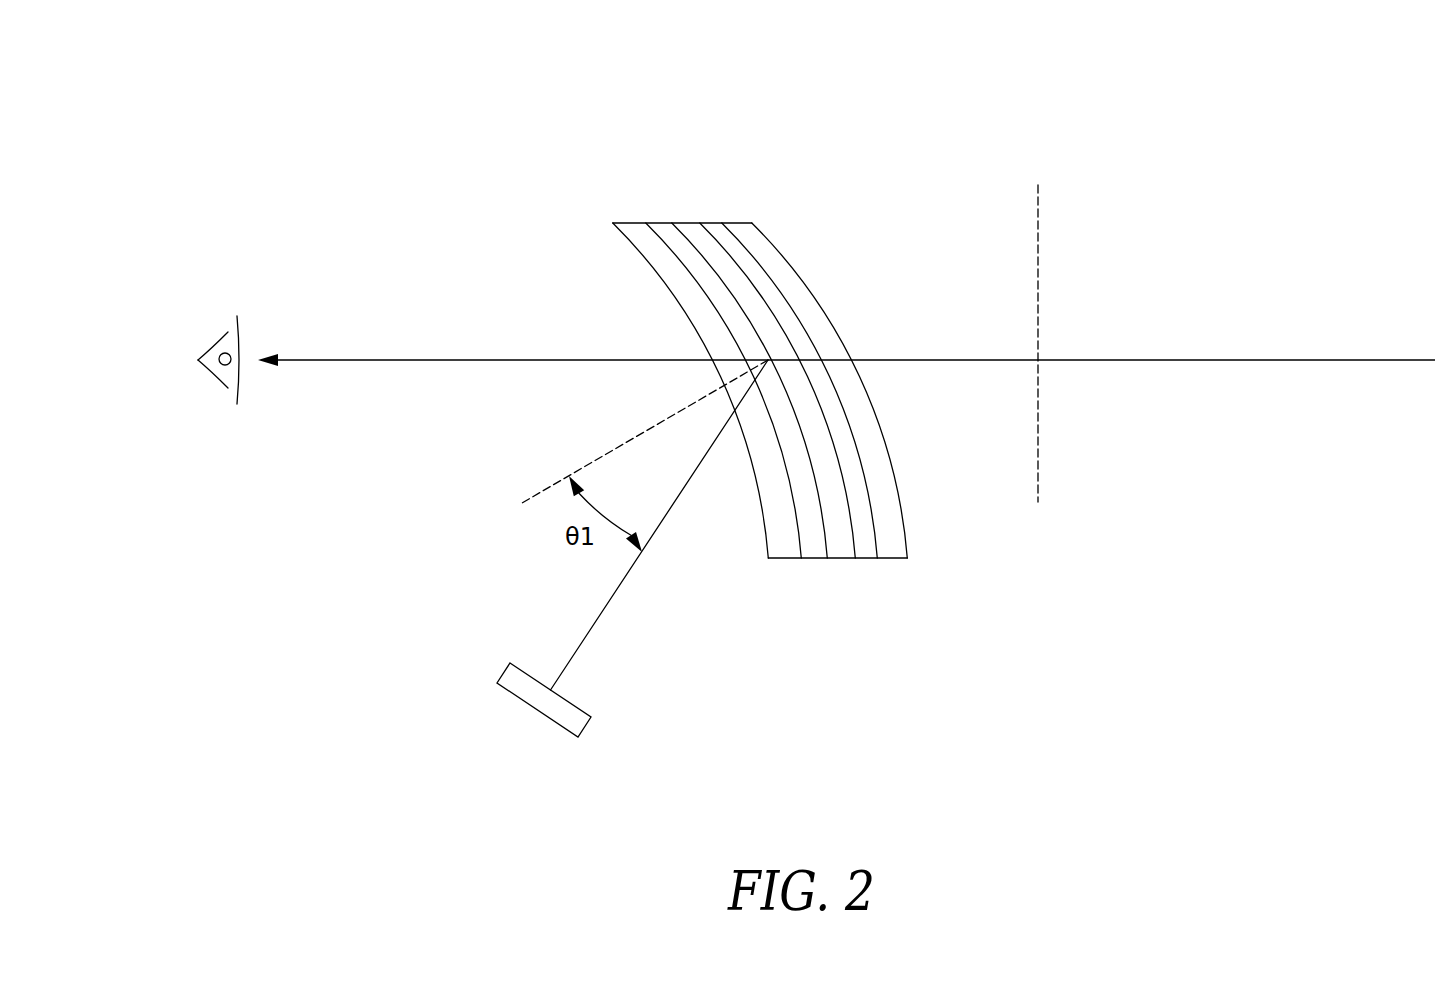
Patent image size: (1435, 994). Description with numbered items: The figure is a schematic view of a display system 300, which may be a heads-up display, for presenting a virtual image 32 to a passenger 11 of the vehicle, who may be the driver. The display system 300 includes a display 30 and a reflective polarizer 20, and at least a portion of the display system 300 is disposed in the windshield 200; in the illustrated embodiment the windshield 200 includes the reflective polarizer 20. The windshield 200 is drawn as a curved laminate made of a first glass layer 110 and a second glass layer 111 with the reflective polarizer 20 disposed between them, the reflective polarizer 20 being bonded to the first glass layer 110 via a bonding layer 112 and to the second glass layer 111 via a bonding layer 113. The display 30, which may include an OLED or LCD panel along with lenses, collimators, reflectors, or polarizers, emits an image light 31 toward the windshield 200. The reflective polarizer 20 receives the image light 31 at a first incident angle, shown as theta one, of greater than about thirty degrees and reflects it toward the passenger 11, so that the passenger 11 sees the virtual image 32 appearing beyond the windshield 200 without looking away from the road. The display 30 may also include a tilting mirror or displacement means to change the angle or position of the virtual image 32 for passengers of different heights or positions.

The display system 300 is at (213, 63).
The windshield 200 is at (760, 140).
The passenger 11 is at (197, 313).
The virtual image 32 is at (1038, 203).
The image light 31 is at (587, 637).
The display 30 is at (517, 680).
The reflective polarizer 20 is at (838, 542).
The first glass layer 110 is at (887, 543).
The second glass layer 111 is at (783, 542).
The bonding layer 112 is at (715, 232).
The bonding layer 113 is at (667, 233).